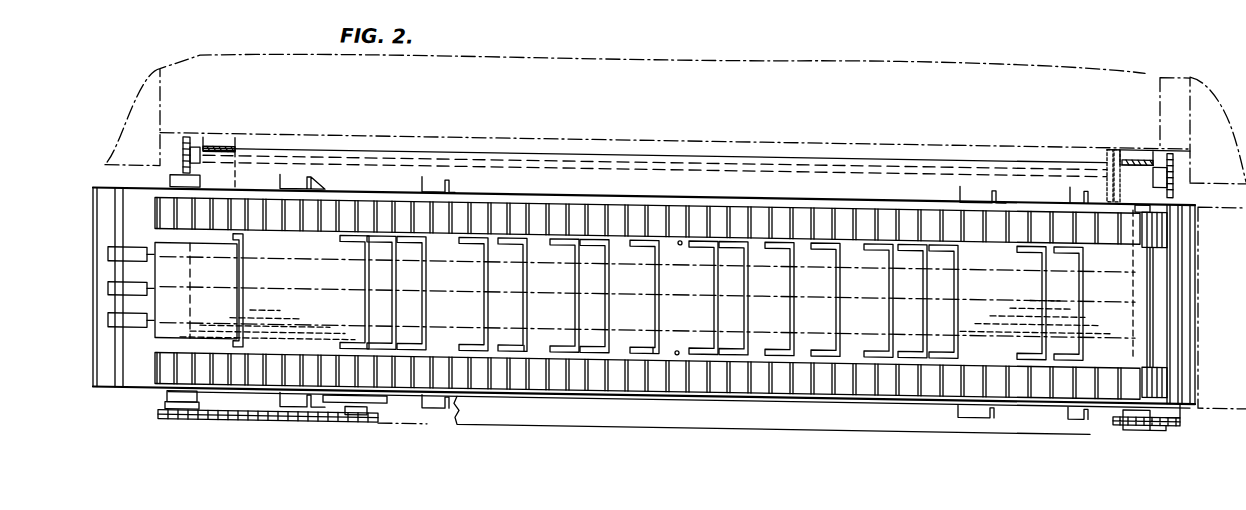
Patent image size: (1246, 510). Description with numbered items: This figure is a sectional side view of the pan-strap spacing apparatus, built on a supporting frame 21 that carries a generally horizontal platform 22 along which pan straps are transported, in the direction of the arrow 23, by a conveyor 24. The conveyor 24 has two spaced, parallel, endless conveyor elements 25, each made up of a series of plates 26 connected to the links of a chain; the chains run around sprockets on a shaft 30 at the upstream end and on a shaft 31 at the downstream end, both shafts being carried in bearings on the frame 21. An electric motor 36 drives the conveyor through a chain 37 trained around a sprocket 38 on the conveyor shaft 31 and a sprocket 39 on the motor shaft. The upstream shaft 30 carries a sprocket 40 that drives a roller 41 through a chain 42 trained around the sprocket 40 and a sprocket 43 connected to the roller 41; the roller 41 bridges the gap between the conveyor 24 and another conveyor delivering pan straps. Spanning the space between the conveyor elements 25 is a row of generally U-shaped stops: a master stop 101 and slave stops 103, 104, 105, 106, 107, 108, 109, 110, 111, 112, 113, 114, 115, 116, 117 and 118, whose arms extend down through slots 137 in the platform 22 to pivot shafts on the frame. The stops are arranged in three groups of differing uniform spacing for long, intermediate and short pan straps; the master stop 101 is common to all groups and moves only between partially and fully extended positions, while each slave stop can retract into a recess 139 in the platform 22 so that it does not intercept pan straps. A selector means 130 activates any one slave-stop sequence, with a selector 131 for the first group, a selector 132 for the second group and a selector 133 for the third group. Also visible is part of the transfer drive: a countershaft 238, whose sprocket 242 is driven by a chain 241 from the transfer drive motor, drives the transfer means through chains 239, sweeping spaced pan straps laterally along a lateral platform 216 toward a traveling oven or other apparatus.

The frame 21 is at (222, 139).
The platform 22 is at (858, 358).
The arrow 23 is at (1230, 281).
The conveyor 24 is at (1150, 224).
The conveyor element 25 is at (1010, 199).
The plate 26 is at (840, 202).
The shaft 30 is at (1141, 412).
The shaft 31 is at (182, 419).
The electric motor 36 is at (387, 392).
The chain 37 is at (300, 418).
The sprocket 38 is at (168, 402).
The sprocket 39 is at (352, 416).
The sprocket 40 is at (1130, 409).
The roller 41 is at (1182, 373).
The chain 42 is at (1160, 407).
The sprocket 43 is at (1178, 401).
The master stop 101 is at (243, 276).
The slave stop 103 is at (392, 294).
The slave stop 104 is at (426, 267).
The slave stop 105 is at (486, 272).
The slave stop 106 is at (524, 292).
The slave stop 107 is at (577, 256).
The slave stop 108 is at (606, 276).
The slave stop 109 is at (657, 278).
The slave stop 110 is at (716, 259).
The slave stop 111 is at (745, 286).
The slave stop 112 is at (794, 276).
The slave stop 113 is at (839, 279).
The slave stop 114 is at (892, 276).
The slave stop 115 is at (924, 287).
The slave stop 116 is at (956, 309).
The slave stop 117 is at (1045, 266).
The slave stop 118 is at (1080, 259).
The selector means 130 is at (129, 287).
The selector 131 is at (131, 256).
The selector 132 is at (140, 283).
The selector 133 is at (107, 294).
The slot 137 is at (680, 229).
The recess 139 is at (526, 337).
The lateral platform 216 is at (1140, 60).
The countershaft 238 is at (655, 150).
The chain 239 is at (184, 140).
The chain 241 is at (1107, 175).
The sprocket 242 is at (1130, 140).